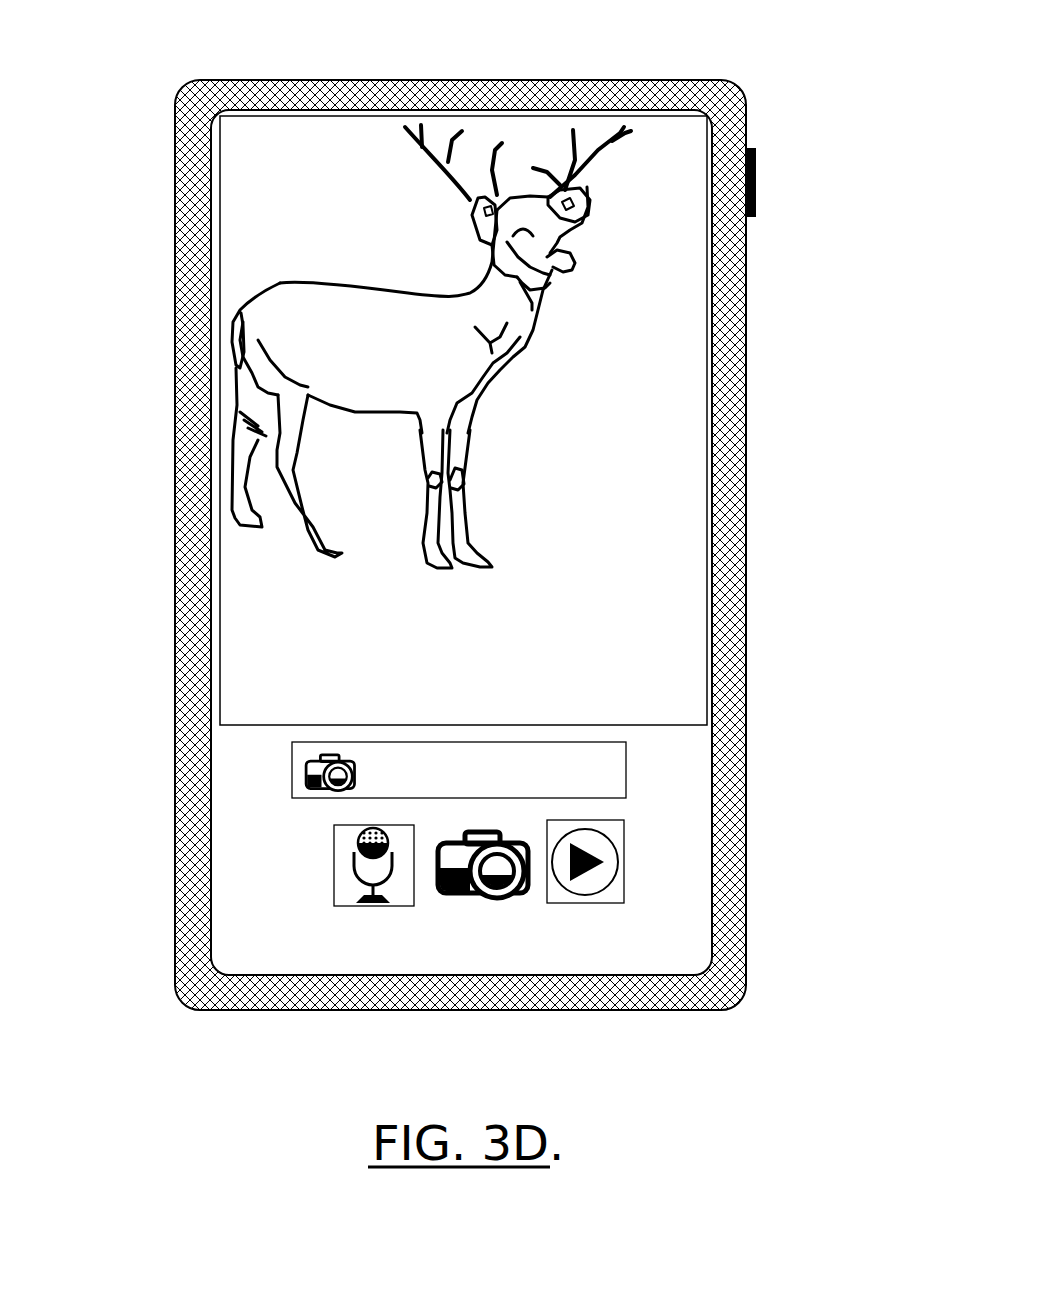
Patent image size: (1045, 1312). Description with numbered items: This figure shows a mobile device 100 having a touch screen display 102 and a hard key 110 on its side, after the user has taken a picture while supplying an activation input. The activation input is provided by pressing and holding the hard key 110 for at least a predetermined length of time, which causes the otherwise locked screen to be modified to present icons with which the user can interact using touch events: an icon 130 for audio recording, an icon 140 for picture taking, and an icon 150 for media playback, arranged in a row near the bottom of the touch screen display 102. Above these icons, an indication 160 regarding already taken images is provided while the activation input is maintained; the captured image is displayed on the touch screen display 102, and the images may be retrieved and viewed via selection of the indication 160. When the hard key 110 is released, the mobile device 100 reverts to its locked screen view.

The mobile device 100 is at (762, 61).
The touch screen display 102 is at (210, 242).
The hard key 110 is at (757, 190).
The icon for audio recording 130 is at (355, 895).
The icon for picture taking 140 is at (468, 905).
The icon for media playback 150 is at (615, 897).
The indication 160 is at (362, 742).